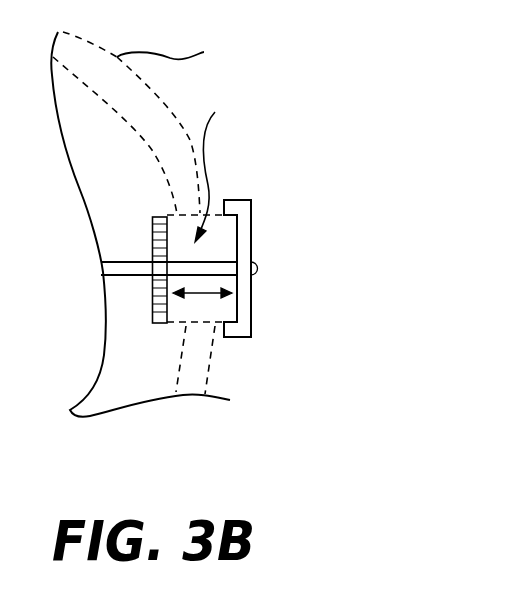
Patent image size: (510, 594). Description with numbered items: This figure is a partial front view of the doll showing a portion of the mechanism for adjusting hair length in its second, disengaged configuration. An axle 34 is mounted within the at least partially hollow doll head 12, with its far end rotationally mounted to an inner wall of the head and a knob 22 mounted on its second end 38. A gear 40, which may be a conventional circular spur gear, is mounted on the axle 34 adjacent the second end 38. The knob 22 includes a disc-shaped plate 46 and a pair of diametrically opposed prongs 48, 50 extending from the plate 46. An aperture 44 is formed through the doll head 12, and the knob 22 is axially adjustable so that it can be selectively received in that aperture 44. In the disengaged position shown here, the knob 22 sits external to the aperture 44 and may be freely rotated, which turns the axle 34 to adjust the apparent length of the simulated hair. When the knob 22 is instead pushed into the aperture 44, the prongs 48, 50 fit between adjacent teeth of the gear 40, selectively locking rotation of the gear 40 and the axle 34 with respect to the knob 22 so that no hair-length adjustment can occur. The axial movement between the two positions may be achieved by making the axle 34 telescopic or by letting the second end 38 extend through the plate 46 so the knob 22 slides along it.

The at least partially hollow doll head 12 is at (141, 224).
The knob 22 is at (252, 217).
The axle 34 is at (120, 262).
The second end 38 is at (251, 252).
The gear 40 is at (152, 315).
The aperture 44 is at (212, 165).
The disc-shaped plate 46 is at (252, 297).
The prong 48 is at (235, 337).
The prong 50 is at (238, 199).